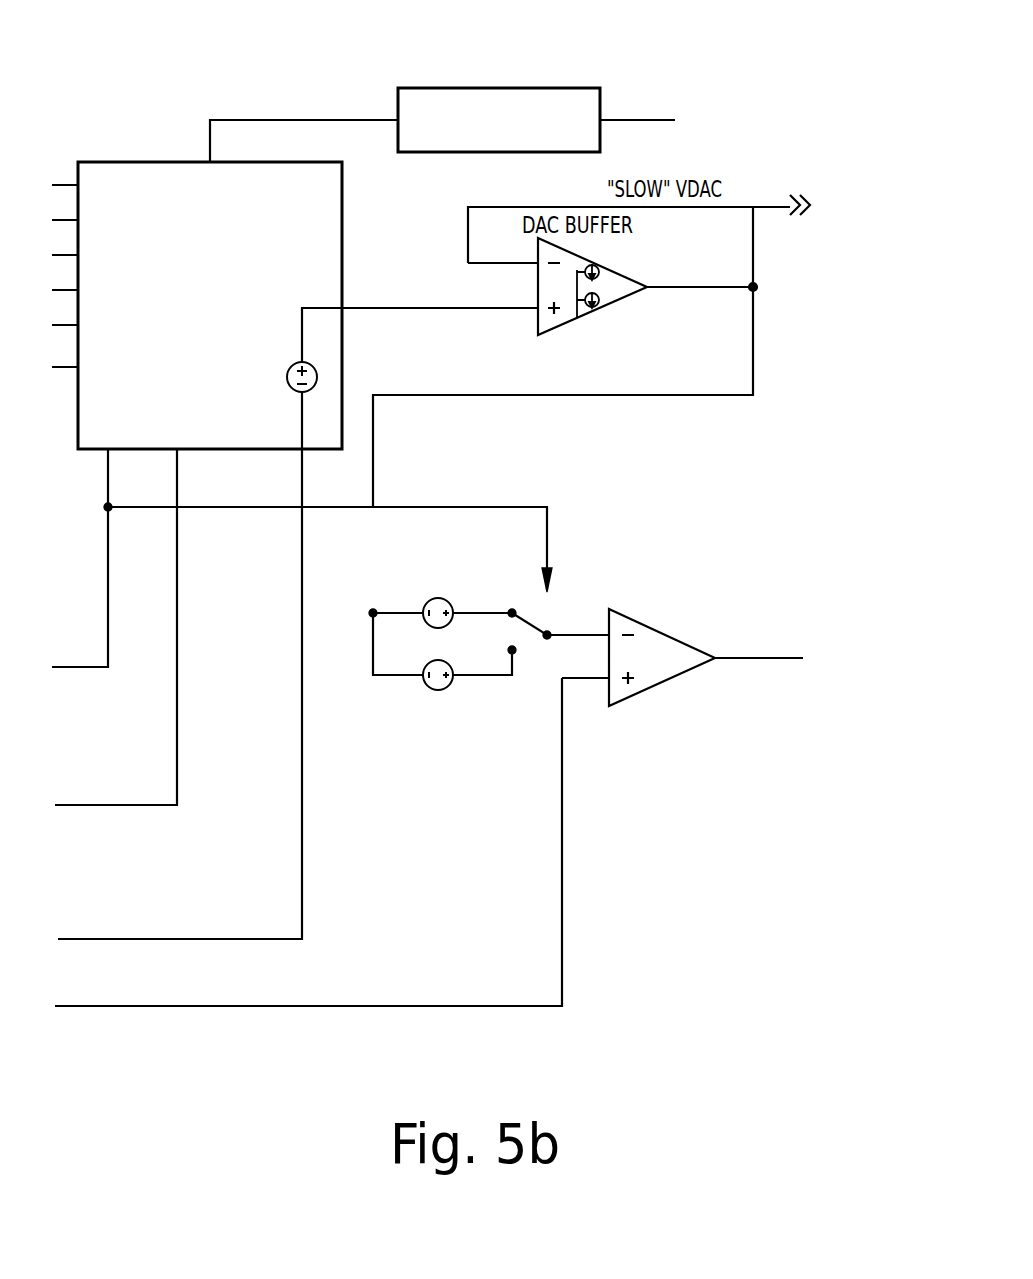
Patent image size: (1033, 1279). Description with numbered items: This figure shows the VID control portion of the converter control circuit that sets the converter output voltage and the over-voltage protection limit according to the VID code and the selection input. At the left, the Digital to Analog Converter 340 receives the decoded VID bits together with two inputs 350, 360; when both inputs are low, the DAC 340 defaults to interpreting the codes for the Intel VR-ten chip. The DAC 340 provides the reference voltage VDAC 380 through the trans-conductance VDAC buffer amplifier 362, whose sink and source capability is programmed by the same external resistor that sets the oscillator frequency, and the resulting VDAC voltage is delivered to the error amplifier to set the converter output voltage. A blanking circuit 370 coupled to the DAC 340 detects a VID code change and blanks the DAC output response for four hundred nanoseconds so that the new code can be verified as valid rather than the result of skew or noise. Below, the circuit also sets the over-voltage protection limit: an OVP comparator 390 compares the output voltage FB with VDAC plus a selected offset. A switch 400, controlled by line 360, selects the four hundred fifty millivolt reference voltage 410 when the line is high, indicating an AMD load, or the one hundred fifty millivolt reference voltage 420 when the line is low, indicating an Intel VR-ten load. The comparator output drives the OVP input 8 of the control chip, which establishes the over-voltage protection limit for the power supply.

The digital to analog converter 340 is at (128, 172).
The input 350 is at (178, 612).
The input line 360 is at (108, 640).
The VDAC buffer amplifier 362 is at (612, 318).
The blanking circuit 370 is at (447, 90).
The VDAC reference voltage 380 is at (805, 198).
The OVP comparator 390 is at (660, 668).
The switch 400 is at (527, 690).
The reference voltage (450 mV) 410 is at (428, 686).
The reference voltage (150 mV) 420 is at (423, 607).
The OVP input 8 is at (803, 660).